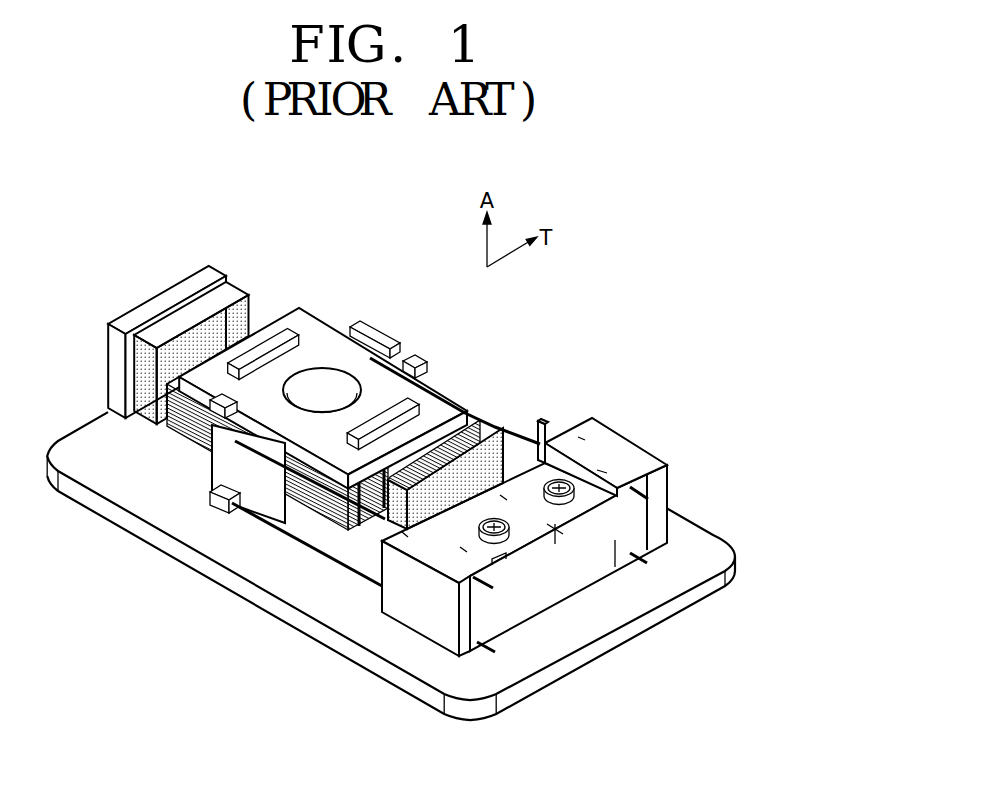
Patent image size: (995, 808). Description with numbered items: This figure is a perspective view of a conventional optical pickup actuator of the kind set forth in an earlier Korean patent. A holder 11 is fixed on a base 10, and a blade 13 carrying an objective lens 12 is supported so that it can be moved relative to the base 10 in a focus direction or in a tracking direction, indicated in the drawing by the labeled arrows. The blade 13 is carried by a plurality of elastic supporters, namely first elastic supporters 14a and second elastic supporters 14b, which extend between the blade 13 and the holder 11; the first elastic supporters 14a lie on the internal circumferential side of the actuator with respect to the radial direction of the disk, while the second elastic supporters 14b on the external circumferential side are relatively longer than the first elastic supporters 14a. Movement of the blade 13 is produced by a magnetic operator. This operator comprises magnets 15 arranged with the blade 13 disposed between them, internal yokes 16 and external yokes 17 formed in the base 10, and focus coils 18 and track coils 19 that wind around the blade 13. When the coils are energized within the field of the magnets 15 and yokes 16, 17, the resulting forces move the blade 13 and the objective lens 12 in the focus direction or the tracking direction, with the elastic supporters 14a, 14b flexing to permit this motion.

The base 10 is at (420, 668).
The holder 11 is at (552, 587).
The objective lens 12 is at (322, 380).
The blade 13 is at (433, 402).
The first elastic supporters 14a is at (507, 420).
The second elastic supporters 14b is at (315, 503).
The magnets 15 is at (193, 307).
The internal yokes 16 is at (286, 328).
The external yokes 17 is at (145, 308).
The focus coils 18 is at (188, 430).
The track coils 19 is at (358, 527).